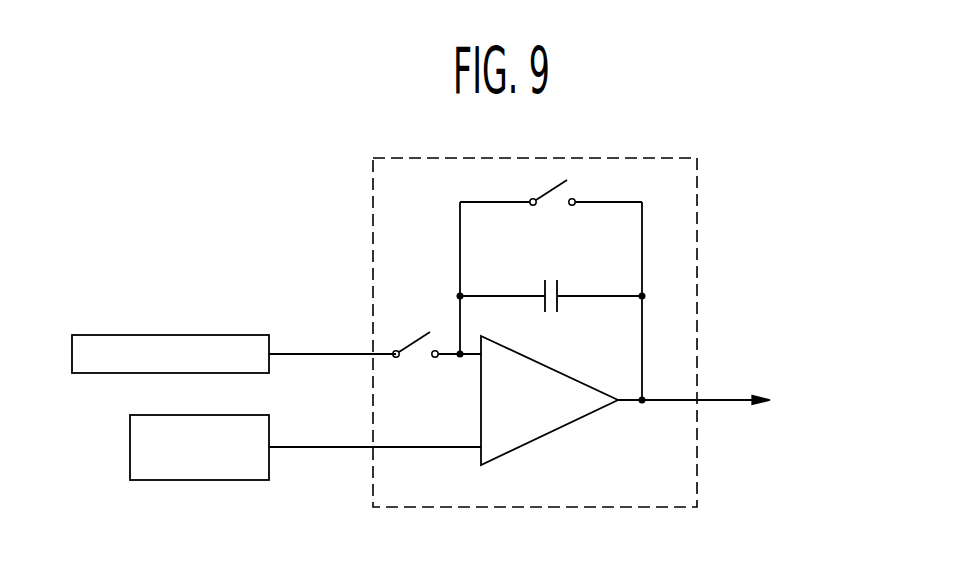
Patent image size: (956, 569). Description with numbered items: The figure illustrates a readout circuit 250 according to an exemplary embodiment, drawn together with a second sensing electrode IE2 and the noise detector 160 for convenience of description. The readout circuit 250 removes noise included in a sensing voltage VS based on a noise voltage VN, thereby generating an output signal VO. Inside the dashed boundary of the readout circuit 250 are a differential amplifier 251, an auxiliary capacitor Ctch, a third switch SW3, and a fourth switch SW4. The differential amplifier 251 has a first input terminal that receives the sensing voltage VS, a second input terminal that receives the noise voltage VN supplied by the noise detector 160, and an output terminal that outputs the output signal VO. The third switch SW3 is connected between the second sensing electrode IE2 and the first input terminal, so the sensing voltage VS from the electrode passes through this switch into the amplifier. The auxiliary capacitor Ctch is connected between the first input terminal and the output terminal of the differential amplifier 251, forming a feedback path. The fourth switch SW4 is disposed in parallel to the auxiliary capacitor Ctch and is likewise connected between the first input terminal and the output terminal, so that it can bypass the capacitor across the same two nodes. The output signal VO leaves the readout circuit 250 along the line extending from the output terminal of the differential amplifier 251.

The readout circuit 250 is at (650, 158).
The differential amplifier 251 is at (552, 435).
The noise detector 160 is at (240, 480).
The second sensing electrode IE2 is at (240, 335).
The third switch SW3 is at (437, 359).
The fourth switch SW4 is at (551, 208).
The auxiliary capacitor Ctch is at (551, 280).
The sensing voltage VS is at (332, 340).
The noise voltage VN is at (375, 433).
The output signal VO is at (712, 389).